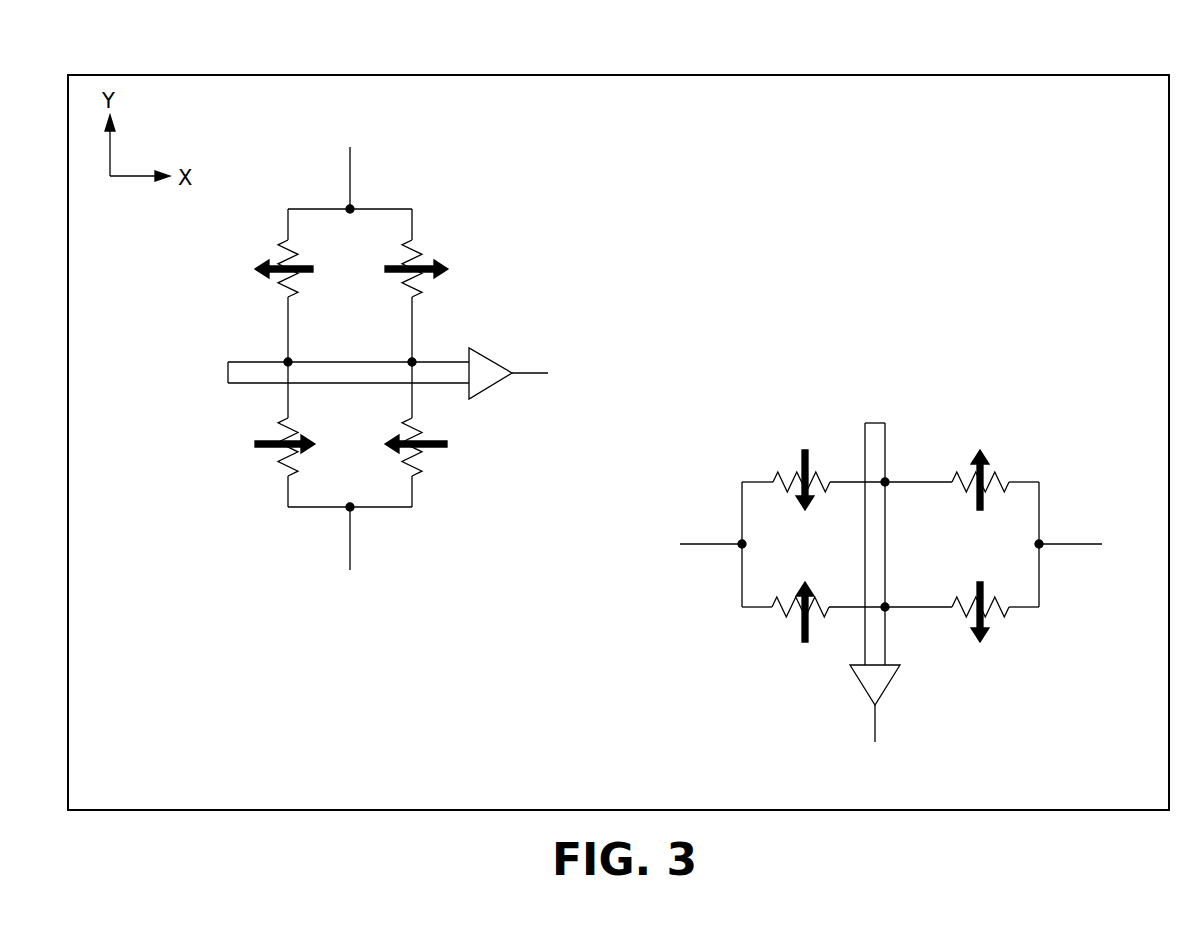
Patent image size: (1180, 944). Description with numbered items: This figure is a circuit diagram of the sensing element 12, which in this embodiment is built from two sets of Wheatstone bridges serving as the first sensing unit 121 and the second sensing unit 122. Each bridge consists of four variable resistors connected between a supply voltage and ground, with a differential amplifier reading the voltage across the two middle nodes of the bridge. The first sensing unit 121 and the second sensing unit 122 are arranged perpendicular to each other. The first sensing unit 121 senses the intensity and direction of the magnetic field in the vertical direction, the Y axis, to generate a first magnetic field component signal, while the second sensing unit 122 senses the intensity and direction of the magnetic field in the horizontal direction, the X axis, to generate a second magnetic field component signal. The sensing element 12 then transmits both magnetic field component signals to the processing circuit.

The sensing element 12 is at (512, 75).
The first sensing unit 121 is at (390, 209).
The second sensing unit 122 is at (1039, 503).